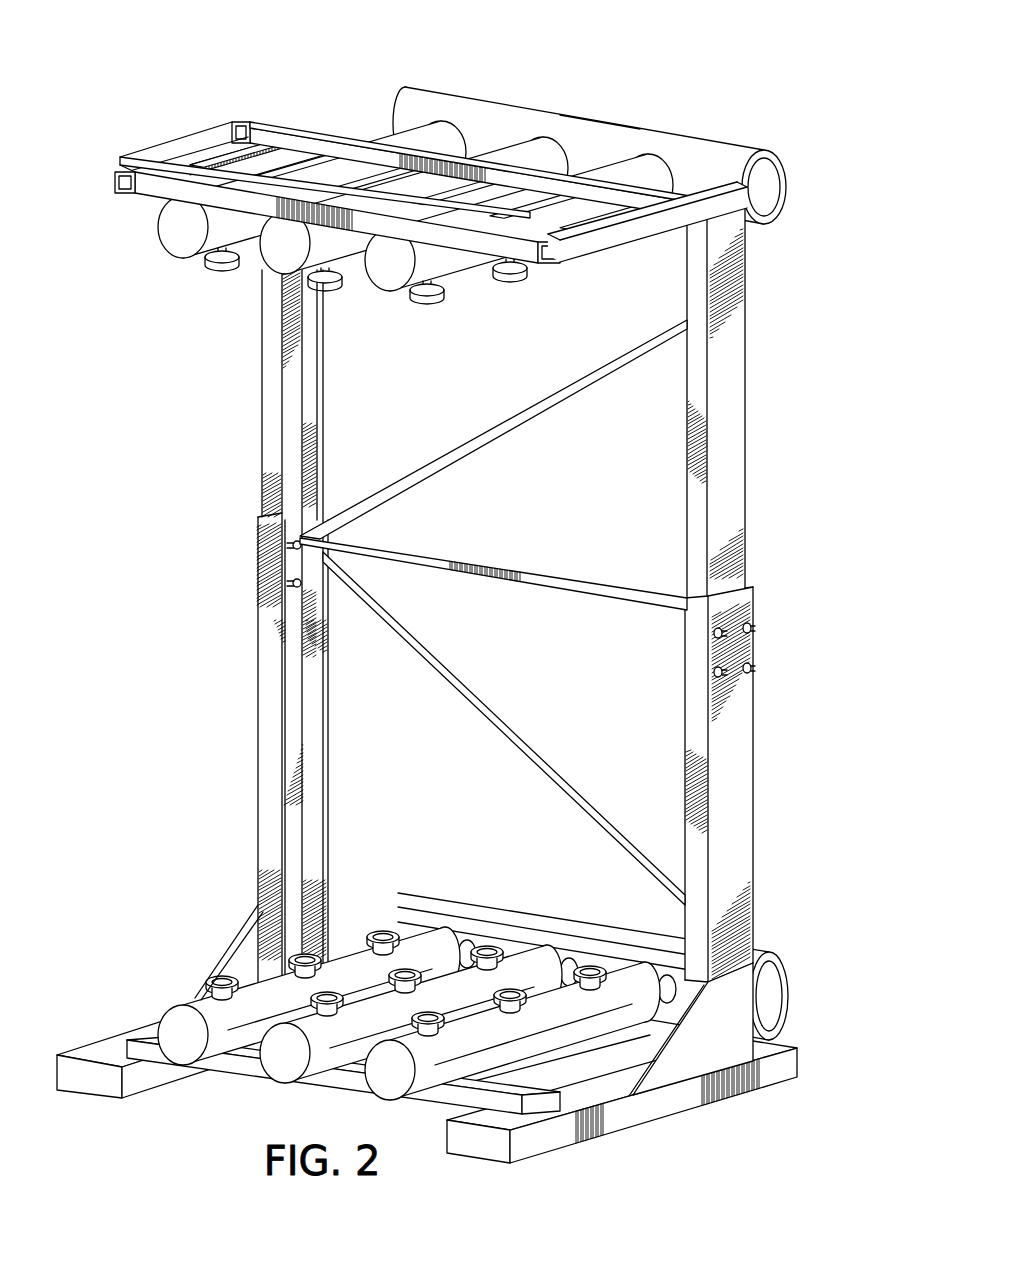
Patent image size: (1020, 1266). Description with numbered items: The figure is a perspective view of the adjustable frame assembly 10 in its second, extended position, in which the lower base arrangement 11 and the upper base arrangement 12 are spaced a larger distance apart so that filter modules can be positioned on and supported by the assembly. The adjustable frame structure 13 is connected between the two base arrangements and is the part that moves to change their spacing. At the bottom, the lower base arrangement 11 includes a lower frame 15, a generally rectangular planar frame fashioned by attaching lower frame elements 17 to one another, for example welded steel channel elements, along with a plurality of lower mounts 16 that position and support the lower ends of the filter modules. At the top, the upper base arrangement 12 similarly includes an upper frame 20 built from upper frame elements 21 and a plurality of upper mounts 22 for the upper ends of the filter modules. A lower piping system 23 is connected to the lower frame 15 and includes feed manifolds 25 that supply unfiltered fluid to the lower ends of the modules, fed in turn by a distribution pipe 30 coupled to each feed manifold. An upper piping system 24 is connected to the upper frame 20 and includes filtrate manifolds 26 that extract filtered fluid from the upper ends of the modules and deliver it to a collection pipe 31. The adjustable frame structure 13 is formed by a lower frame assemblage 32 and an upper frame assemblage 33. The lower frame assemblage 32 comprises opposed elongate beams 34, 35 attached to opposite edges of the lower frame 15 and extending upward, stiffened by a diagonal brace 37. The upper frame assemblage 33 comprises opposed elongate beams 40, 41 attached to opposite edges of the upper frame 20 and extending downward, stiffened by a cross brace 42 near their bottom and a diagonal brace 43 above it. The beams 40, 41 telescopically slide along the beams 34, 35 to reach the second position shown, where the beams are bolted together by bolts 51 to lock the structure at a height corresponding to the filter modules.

The adjustable frame assembly 10 is at (815, 122).
The lower base arrangement 11 is at (102, 1045).
The upper base arrangement 12 is at (402, 133).
The adjustable frame structure 13 is at (262, 540).
The lower frame 15 is at (680, 1100).
The lower mounts 16 is at (218, 975).
The lower frame elements 17 is at (538, 1100).
The upper frame 20 is at (234, 118).
The upper frame elements 21 is at (330, 125).
The upper mounts 22 is at (218, 268).
The lower piping system 23 is at (517, 930).
The upper piping system 24 is at (690, 125).
The feed manifolds 25 is at (455, 975).
The filtrate manifolds 26 is at (433, 130).
The distribution pipe 30 is at (577, 925).
The collection pipe 31 is at (598, 120).
The lower frame assemblage 32 is at (742, 740).
The upper frame assemblage 33 is at (742, 370).
The elongate beam 34 is at (742, 815).
The elongate beam 35 is at (262, 660).
The diagonal brace 37 is at (535, 742).
The elongate beam 40 is at (742, 440).
The elongate beam 41 is at (270, 418).
The cross brace 42 is at (592, 585).
The diagonal brace 43 is at (470, 440).
The bolts 51 is at (296, 548).